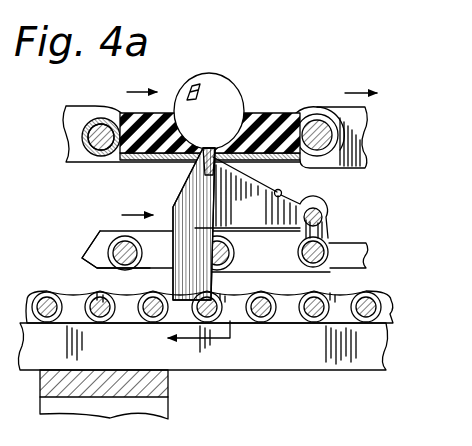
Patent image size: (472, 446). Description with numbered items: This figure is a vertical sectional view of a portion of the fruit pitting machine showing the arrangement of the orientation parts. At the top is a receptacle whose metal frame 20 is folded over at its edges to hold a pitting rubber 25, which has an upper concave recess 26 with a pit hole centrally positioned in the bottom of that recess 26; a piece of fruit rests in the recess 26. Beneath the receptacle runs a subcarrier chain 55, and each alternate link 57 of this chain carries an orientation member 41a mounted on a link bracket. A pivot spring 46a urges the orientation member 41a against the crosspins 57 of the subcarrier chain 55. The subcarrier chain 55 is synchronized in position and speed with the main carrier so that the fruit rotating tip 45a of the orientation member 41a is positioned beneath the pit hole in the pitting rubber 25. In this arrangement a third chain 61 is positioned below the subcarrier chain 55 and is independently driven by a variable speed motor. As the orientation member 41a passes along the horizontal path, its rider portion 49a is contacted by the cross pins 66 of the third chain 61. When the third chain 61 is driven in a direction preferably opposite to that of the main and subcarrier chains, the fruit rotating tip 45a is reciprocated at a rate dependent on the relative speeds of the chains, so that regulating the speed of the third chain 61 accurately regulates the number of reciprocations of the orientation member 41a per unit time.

The metal frame 20 is at (302, 113).
The pitting rubber 25 is at (270, 117).
The upper concave recess 26 is at (172, 108).
The orientation member 41a is at (258, 224).
The fruit rotating tip 45a is at (193, 163).
The pivot spring 46a is at (287, 194).
The rider portion 49a is at (173, 277).
The subcarrier chain 55 is at (277, 271).
The link 57 is at (329, 243).
The third chain 61 is at (128, 317).
The cross pin 66 is at (155, 314).